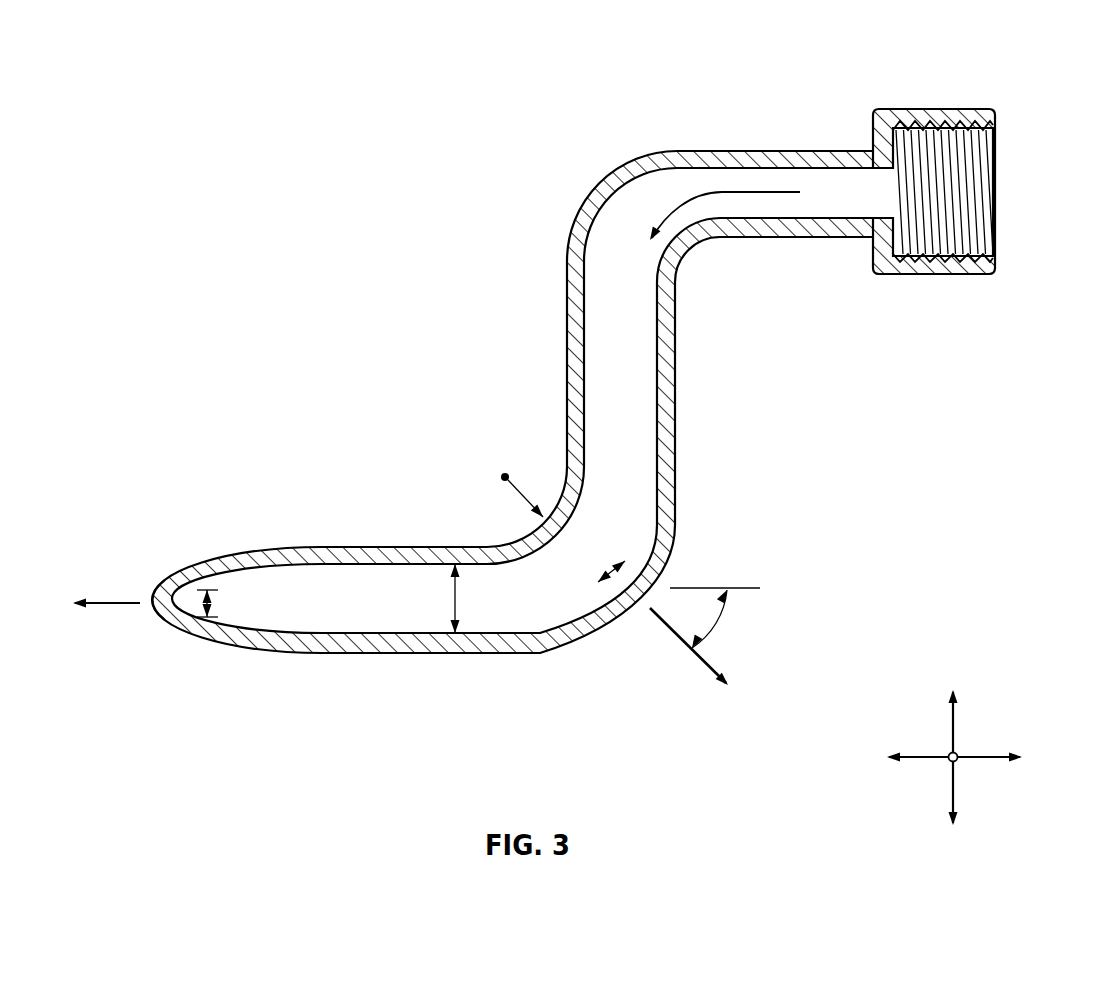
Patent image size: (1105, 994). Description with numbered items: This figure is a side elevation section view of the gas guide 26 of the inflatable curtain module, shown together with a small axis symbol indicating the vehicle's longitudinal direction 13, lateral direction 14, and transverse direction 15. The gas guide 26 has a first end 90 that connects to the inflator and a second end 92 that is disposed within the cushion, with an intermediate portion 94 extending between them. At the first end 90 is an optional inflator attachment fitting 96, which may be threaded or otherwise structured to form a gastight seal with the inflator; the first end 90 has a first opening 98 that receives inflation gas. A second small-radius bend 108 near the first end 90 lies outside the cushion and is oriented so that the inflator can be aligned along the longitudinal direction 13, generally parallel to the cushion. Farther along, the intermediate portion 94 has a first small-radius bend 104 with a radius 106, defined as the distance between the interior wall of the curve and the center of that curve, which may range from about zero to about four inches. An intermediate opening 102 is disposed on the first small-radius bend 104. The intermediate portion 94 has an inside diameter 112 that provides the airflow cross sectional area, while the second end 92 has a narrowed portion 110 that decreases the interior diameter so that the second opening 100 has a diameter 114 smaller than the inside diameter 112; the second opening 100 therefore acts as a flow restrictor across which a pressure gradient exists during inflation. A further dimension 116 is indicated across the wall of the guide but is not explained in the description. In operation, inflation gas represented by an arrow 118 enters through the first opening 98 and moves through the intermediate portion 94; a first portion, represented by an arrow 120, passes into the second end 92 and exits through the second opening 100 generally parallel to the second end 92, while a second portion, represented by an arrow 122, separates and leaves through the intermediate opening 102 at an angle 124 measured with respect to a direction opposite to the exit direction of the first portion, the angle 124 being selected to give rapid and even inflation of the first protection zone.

The gas guide 26 is at (412, 157).
The first end 90 is at (810, 128).
The second end 92 is at (231, 537).
The intermediate portion 94 is at (553, 437).
The inflator attachment fitting 96 is at (940, 110).
The first opening 98 is at (893, 173).
The second opening 100 is at (152, 600).
The intermediate opening 102 is at (650, 592).
The first small-radius bend 104 is at (637, 640).
The radius 106 is at (527, 492).
The second small-radius bend 108 is at (597, 182).
The narrowed portion 110 is at (197, 570).
The inside diameter 112 is at (463, 600).
The diameter 114 is at (215, 603).
The wall thickness 116 is at (598, 578).
The arrow 118 is at (733, 193).
The arrow 120 is at (103, 603).
The arrow 122 is at (705, 660).
The angle 124 is at (720, 627).
The longitudinal direction 13 is at (985, 758).
The lateral direction 14 is at (945, 765).
The transverse direction 15 is at (953, 730).